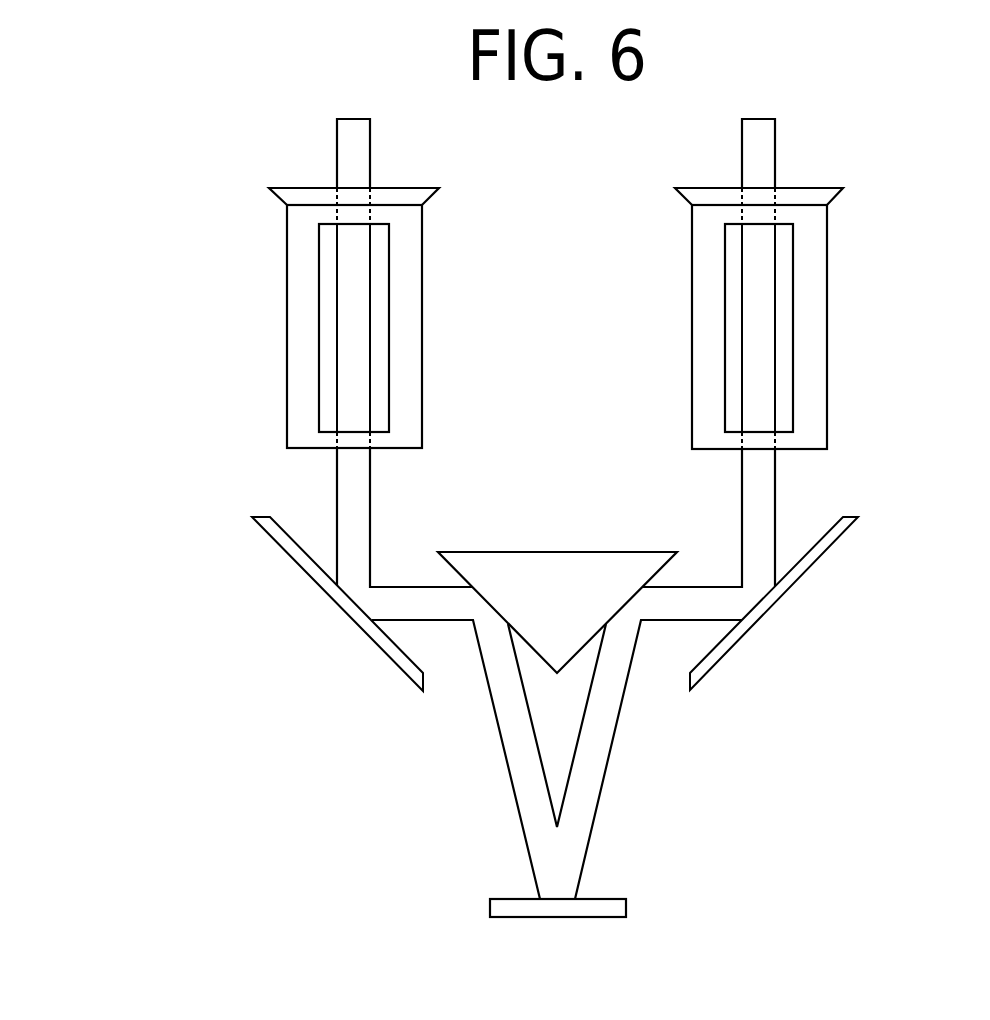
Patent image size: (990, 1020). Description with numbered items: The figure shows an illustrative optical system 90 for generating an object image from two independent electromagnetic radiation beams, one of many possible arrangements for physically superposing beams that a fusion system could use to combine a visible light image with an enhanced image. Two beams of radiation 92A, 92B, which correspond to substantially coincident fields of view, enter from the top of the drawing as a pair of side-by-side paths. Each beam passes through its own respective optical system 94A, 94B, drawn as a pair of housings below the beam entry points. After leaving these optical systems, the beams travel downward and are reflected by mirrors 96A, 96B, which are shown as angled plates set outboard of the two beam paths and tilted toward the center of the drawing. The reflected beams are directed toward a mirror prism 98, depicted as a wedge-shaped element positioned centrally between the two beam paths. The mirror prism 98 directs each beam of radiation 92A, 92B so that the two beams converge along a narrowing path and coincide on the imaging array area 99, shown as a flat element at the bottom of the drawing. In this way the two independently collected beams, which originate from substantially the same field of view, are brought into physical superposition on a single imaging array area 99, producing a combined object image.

The optical system 90 is at (270, 778).
The beam of radiation 92A is at (345, 171).
The beam of radiation 92B is at (768, 170).
The optical system 94A is at (290, 300).
The optical system 94B is at (827, 300).
The mirror 96A is at (272, 532).
The mirror 96B is at (845, 528).
The mirror prism 98 is at (557, 612).
The imaging array area 99 is at (613, 905).